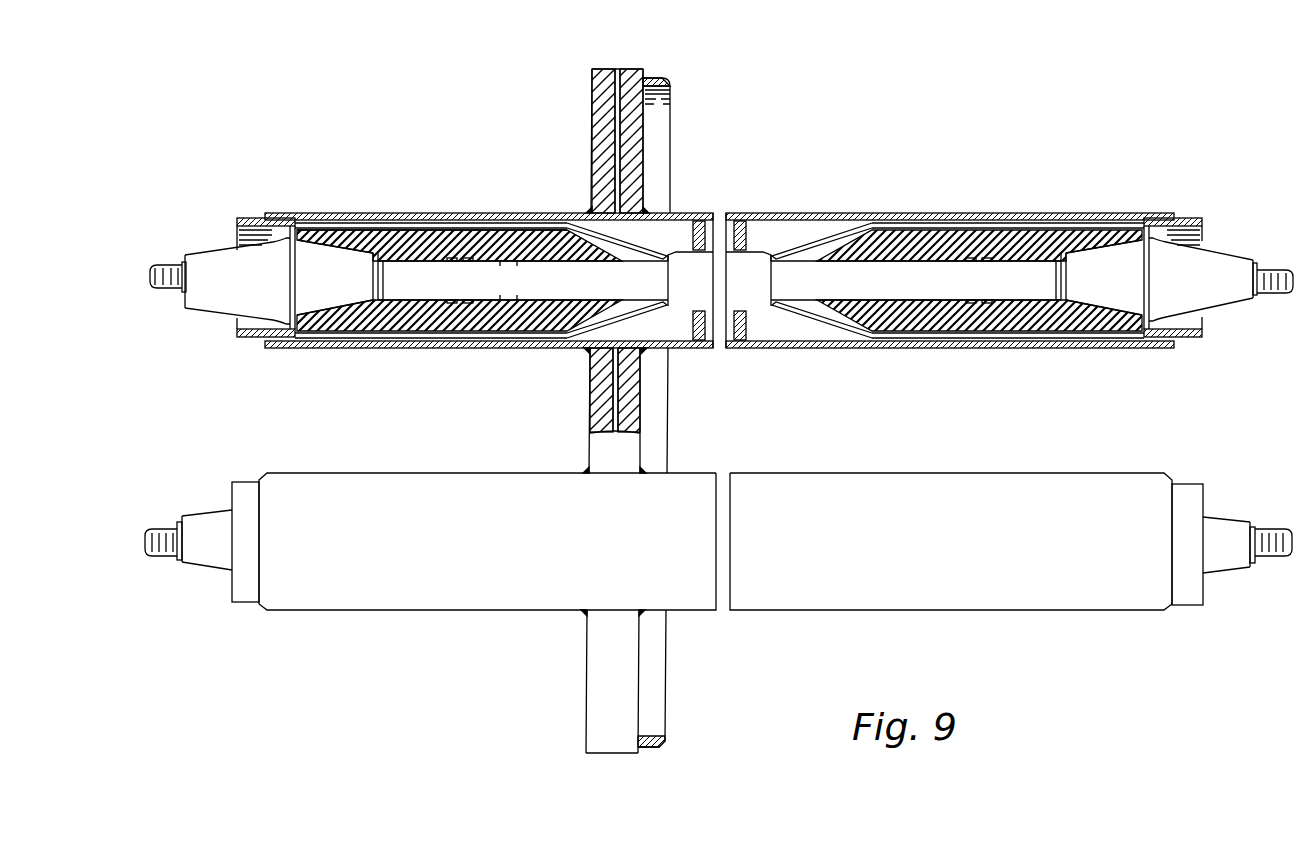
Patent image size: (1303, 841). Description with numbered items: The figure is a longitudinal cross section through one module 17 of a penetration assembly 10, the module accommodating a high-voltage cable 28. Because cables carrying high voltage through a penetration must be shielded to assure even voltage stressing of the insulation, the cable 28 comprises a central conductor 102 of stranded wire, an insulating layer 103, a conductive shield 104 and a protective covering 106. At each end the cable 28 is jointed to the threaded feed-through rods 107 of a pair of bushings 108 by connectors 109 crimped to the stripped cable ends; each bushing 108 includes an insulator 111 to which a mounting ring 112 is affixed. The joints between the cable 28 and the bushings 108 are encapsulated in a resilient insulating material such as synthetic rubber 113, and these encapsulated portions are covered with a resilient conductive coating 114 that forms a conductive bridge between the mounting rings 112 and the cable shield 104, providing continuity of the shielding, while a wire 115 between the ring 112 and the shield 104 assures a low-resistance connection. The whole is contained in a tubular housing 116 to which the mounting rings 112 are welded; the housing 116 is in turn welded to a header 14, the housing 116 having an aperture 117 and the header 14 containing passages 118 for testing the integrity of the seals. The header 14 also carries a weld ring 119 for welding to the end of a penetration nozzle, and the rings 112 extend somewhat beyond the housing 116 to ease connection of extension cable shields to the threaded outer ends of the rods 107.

The penetration assembly 10 is at (580, 153).
The header 14 is at (586, 673).
The module 17 is at (755, 459).
The cable 28 is at (873, 303).
The central conductor 102 is at (497, 327).
The insulating layer 103 is at (545, 323).
The conductive shield 104 is at (650, 267).
The protective covering 106 is at (674, 310).
The threaded feed-through rods 107 is at (170, 289).
The bushings 108 is at (211, 316).
The connectors 109 is at (450, 227).
The insulator 111 is at (357, 232).
The mounting ring 112 is at (245, 218).
The synthetic rubber 113 is at (410, 237).
The resilient conductive coating 114 is at (530, 232).
The wire 115 is at (323, 225).
The tubular housing 116 is at (863, 215).
The aperture 117 is at (647, 210).
The passages 118 is at (620, 132).
The weld ring 119 is at (666, 80).